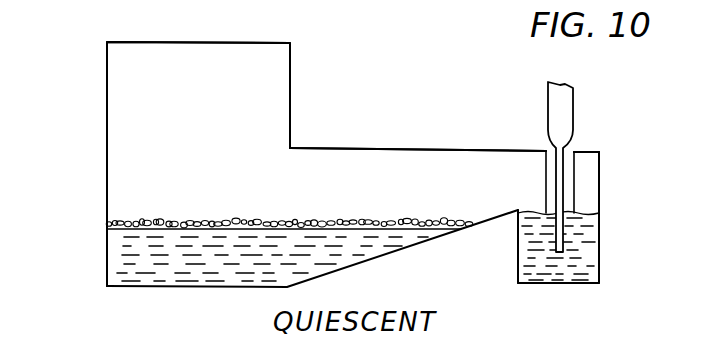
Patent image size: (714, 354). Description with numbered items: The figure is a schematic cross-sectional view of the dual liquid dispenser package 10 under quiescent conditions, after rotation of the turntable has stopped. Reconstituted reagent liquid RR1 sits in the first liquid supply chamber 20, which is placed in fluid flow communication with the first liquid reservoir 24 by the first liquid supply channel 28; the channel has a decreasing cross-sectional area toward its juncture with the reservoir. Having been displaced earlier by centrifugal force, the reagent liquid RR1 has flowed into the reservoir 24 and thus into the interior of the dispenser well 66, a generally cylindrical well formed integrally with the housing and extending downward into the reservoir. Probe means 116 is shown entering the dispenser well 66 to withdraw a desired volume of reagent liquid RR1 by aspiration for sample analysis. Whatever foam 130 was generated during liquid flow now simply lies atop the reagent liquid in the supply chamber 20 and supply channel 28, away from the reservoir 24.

The dual liquid dispenser package 10 is at (100, 107).
The first liquid supply chamber 20 is at (133, 174).
The first liquid supply channel 28 is at (393, 185).
The foam 130 is at (345, 219).
The reconstituted reagent liquid RR1 is at (165, 231).
The dispenser well 66 is at (576, 152).
The probe means 116 is at (572, 103).
The first liquid reservoir 24 is at (562, 258).